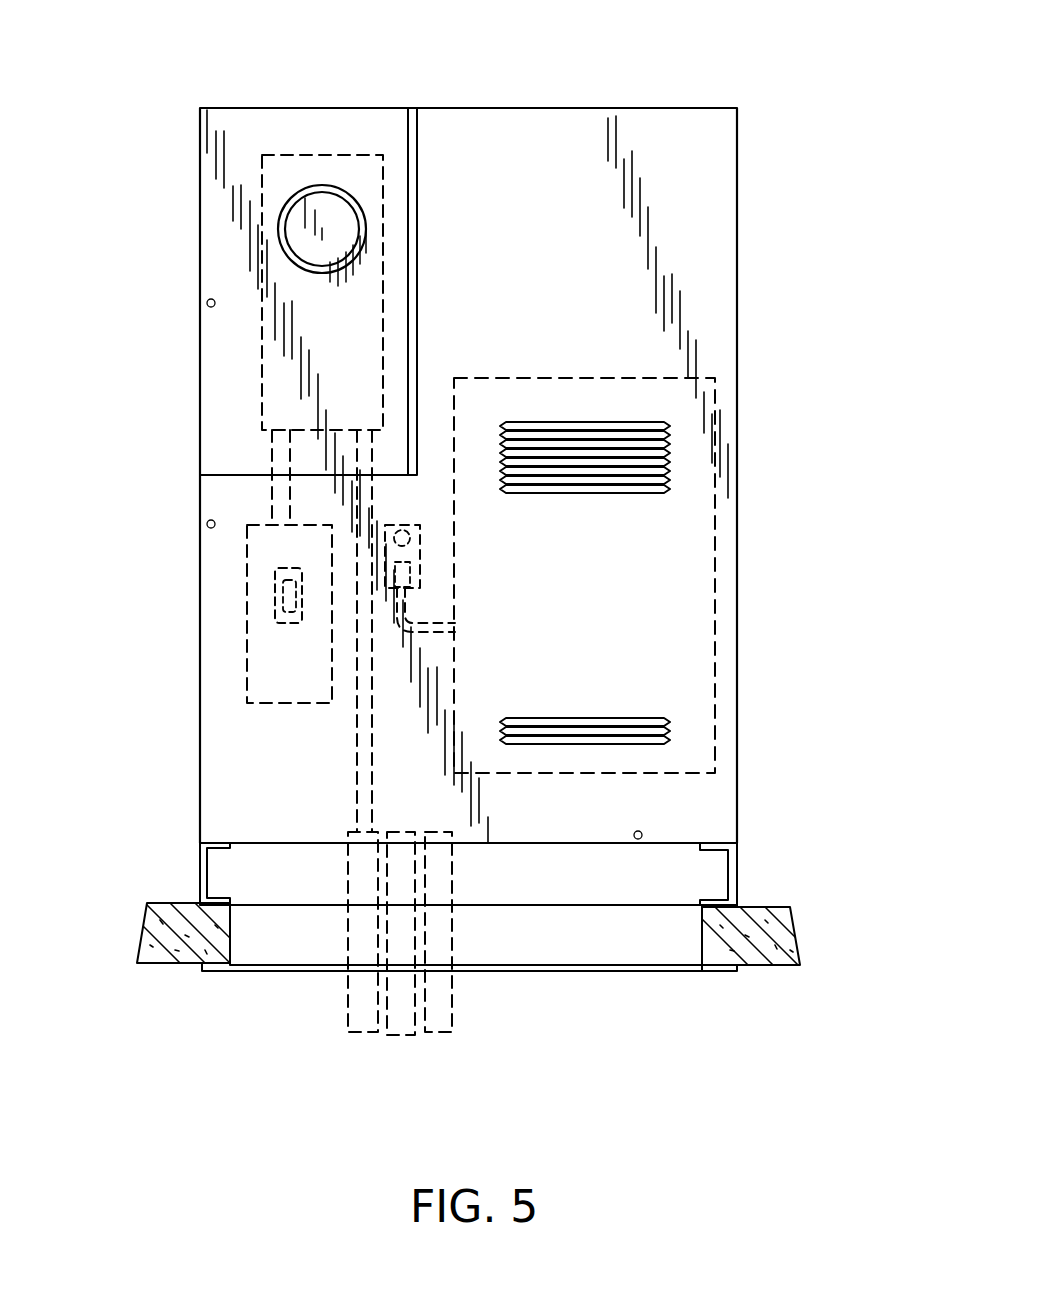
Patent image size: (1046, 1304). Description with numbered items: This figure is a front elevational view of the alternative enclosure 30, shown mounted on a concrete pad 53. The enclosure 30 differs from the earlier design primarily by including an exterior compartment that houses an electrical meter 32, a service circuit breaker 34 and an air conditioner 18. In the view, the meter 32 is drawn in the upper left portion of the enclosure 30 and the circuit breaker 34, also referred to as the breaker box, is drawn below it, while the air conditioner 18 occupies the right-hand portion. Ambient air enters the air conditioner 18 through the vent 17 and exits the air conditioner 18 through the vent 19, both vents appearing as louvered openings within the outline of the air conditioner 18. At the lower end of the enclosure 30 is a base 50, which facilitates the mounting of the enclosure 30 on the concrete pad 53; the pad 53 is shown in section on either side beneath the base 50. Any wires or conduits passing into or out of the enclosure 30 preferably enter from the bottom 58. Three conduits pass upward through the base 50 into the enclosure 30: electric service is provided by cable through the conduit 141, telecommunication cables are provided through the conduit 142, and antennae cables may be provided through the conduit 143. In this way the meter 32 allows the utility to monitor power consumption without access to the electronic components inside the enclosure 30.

The enclosure 30 is at (629, 95).
The electrical meter 32 is at (262, 187).
The service circuit breaker 34 is at (247, 583).
The air conditioner 18 is at (717, 393).
The vent 17 is at (628, 466).
The vent 19 is at (628, 722).
The base 50 is at (200, 867).
The bottom 58 is at (590, 845).
The concrete pad 53 is at (135, 952).
The conduit 141 is at (347, 985).
The conduit 142 is at (402, 1038).
The conduit 143 is at (449, 993).